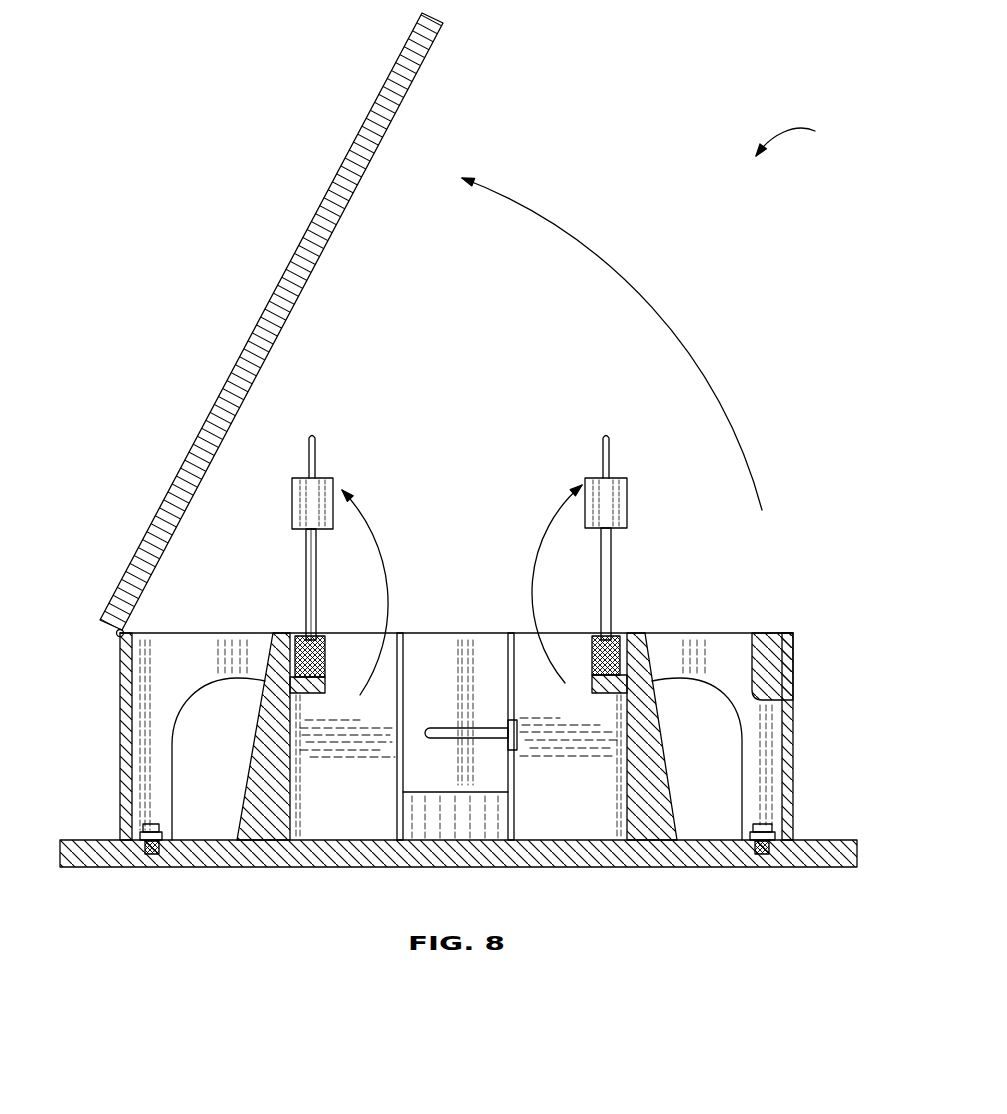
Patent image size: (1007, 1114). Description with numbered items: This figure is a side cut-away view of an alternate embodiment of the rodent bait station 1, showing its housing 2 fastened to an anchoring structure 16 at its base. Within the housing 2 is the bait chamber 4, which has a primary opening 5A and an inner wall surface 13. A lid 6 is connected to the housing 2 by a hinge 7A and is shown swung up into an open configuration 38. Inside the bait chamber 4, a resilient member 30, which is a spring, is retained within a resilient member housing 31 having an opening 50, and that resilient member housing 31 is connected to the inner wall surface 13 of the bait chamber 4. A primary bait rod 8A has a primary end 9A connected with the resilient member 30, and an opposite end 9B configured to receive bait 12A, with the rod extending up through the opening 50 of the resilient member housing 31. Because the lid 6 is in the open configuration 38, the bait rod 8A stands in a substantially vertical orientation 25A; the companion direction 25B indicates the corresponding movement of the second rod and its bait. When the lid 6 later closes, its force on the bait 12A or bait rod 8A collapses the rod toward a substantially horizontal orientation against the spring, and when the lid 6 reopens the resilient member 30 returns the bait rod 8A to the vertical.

The rodent bait station 1 is at (797, 138).
The housing 2 is at (122, 693).
The bait chamber 4 is at (544, 784).
The primary opening 5A is at (425, 657).
The lid 6 is at (397, 60).
The hinge 7A is at (117, 630).
The primary bait rod 8A is at (316, 612).
The primary end 9A is at (316, 633).
The end 9B is at (313, 445).
The bait 12A is at (292, 501).
The inner wall surface 13 is at (293, 812).
The anchoring structure 16 is at (815, 847).
The substantially vertical orientation 25A is at (380, 527).
The pin movement direction 25B is at (530, 573).
The resilient member 30 is at (308, 693).
The resilient member housing 31 is at (459, 737).
The open configuration 38 is at (657, 313).
The opening 50 is at (324, 668).